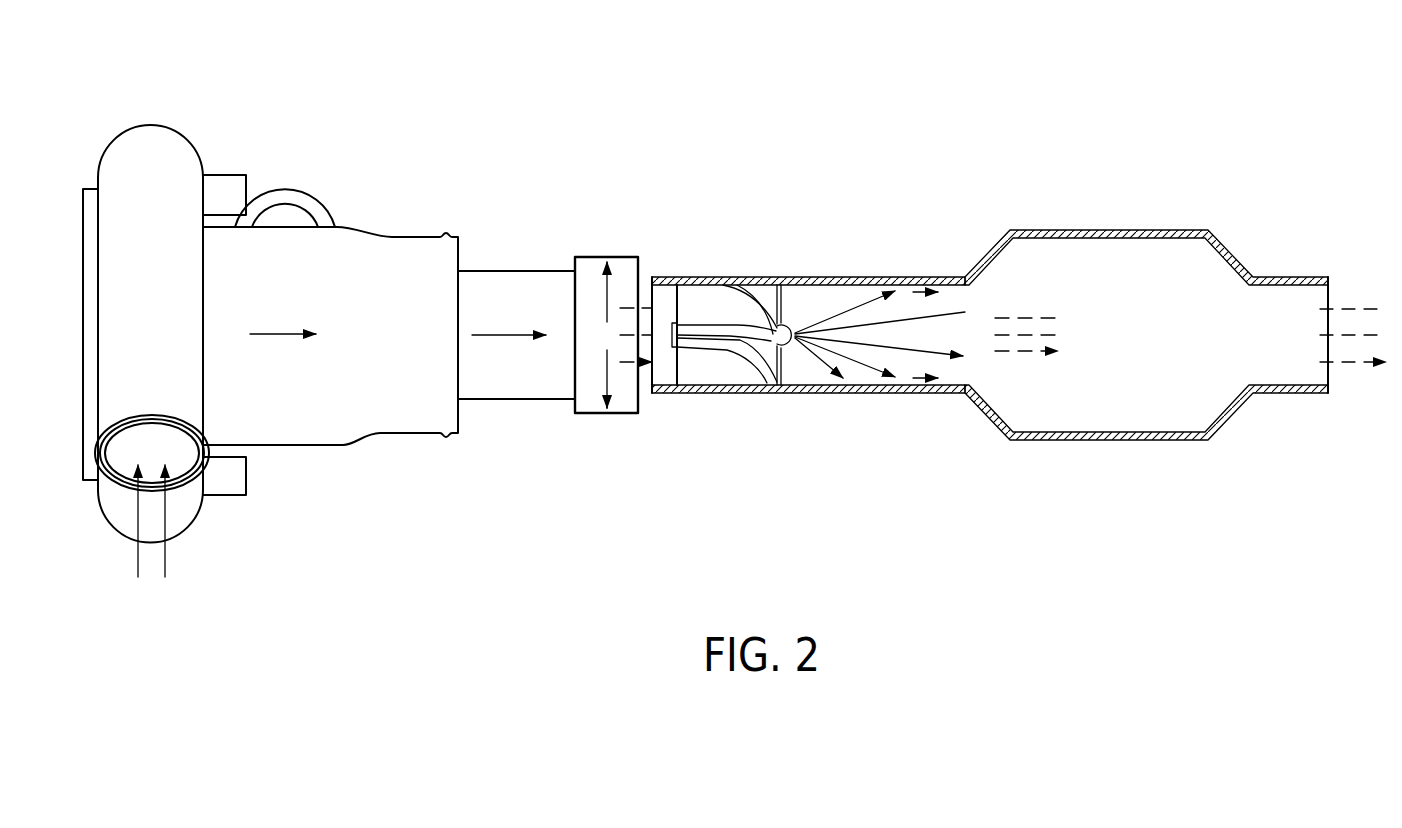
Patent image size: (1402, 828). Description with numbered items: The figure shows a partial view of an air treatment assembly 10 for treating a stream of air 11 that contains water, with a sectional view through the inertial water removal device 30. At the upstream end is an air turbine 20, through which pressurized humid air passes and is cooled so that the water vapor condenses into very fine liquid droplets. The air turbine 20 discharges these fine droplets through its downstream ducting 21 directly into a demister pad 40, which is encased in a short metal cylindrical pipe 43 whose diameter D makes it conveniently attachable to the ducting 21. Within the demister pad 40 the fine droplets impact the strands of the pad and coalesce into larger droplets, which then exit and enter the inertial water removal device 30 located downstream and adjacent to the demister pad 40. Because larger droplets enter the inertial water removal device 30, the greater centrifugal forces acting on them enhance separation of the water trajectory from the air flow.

The air treatment assembly 10 is at (486, 171).
The stream of air 11 is at (286, 336).
The air turbine 20 is at (153, 154).
The ducting 21 is at (551, 271).
The inertial water removal device 30 is at (1083, 248).
The demister pad 40 is at (641, 277).
The short metal cylindrical pipe 43 is at (590, 263).